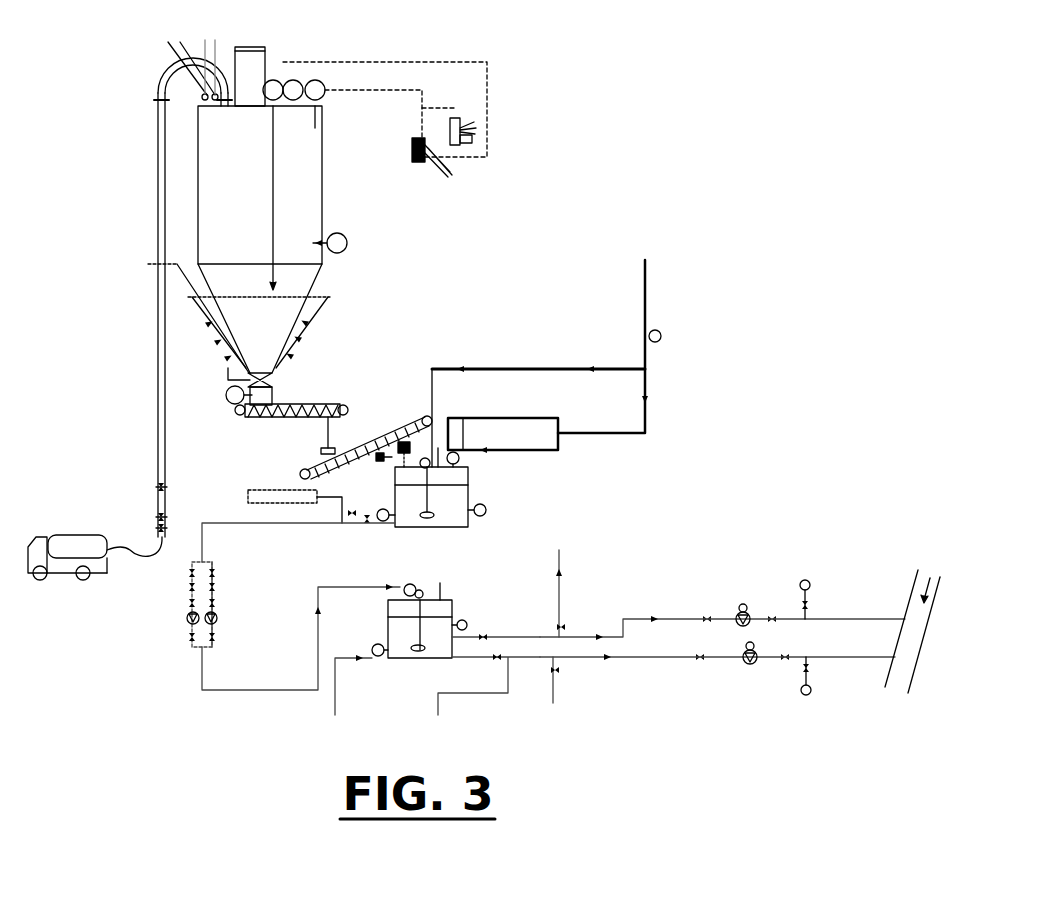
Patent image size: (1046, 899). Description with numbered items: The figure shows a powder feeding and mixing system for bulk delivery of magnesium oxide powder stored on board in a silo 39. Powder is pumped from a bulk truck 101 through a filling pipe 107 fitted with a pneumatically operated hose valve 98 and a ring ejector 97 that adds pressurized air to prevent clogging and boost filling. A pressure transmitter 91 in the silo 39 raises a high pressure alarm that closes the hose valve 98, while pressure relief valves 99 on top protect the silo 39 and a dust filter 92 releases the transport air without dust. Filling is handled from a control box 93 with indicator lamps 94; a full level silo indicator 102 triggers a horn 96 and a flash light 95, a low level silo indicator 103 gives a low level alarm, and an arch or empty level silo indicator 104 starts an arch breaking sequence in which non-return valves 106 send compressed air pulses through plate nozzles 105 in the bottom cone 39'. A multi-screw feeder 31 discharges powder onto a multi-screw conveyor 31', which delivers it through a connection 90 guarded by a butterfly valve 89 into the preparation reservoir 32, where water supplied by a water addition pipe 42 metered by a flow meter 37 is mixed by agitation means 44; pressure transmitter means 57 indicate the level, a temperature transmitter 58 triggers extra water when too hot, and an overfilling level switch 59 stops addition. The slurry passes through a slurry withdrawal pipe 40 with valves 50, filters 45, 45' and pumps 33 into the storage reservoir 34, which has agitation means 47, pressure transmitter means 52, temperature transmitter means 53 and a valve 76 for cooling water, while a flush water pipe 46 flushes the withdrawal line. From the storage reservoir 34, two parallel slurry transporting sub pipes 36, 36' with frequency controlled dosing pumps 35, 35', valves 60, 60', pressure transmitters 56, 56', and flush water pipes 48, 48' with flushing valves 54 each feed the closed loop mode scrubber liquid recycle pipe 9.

The closed loop mode scrubber liquid recycle pipe 9 is at (912, 631).
The multi-screw feeder 31 is at (291, 409).
The multi-screw conveyor 31' is at (366, 426).
The preparation reservoir 32 is at (458, 498).
The pump 33 is at (187, 618).
The storage reservoir 34 is at (422, 480).
The dosing pump 35 is at (739, 584).
The dosing pump 35' is at (732, 674).
The slurry transporting sub pipe 36 is at (722, 584).
The slurry transporting sub pipe 36' is at (717, 701).
The flow meter 37 is at (661, 334).
The silo 39 is at (260, 239).
The bottom cone 39' is at (279, 318).
The slurry withdrawal pipe 40 is at (222, 530).
The water addition pipe 42 is at (648, 265).
The agitation means 44 is at (430, 518).
The filter 45 is at (156, 604).
The filter 45' is at (251, 604).
The flush water pipe 46 is at (256, 494).
The agitation means 47 is at (422, 655).
The flush water pipe 48 is at (573, 593).
The flush water pipe 48' is at (548, 703).
The valve 50 is at (190, 572).
The pressure transmitter means 52 is at (378, 644).
The temperature transmitter means 53 is at (462, 618).
The flushing valve 54 is at (565, 625).
The pressure transmitter 56 is at (830, 595).
The pressure transmitter 56' is at (834, 688).
The pressure transmitter means 57 is at (383, 522).
The temperature transmitter 58 is at (486, 510).
The overfilling level switch 59 is at (460, 460).
The valve 60 is at (501, 626).
The valve 60' is at (493, 684).
The valve 76 is at (350, 518).
The butterfly valve 89 is at (386, 460).
The connection 90 is at (412, 452).
The pressure transmitter 91 is at (290, 82).
The dust filter 92 is at (250, 76).
The control box 93 is at (412, 157).
The indicator lamps 94 is at (445, 171).
The flash light 95 is at (468, 125).
The horn 96 is at (472, 140).
The ring ejector 97 is at (157, 528).
The hose valve 98 is at (167, 487).
The pressure relief valve 99 is at (188, 60).
The bulk truck 101 is at (65, 562).
The full level silo indicator 102 is at (320, 92).
The low level silo indicator 103 is at (342, 235).
The arch or empty level silo indicator 104 is at (232, 386).
The plate nozzle 105 is at (290, 340).
The non-return valve 106 is at (212, 324).
The filling pipe 107 is at (160, 240).